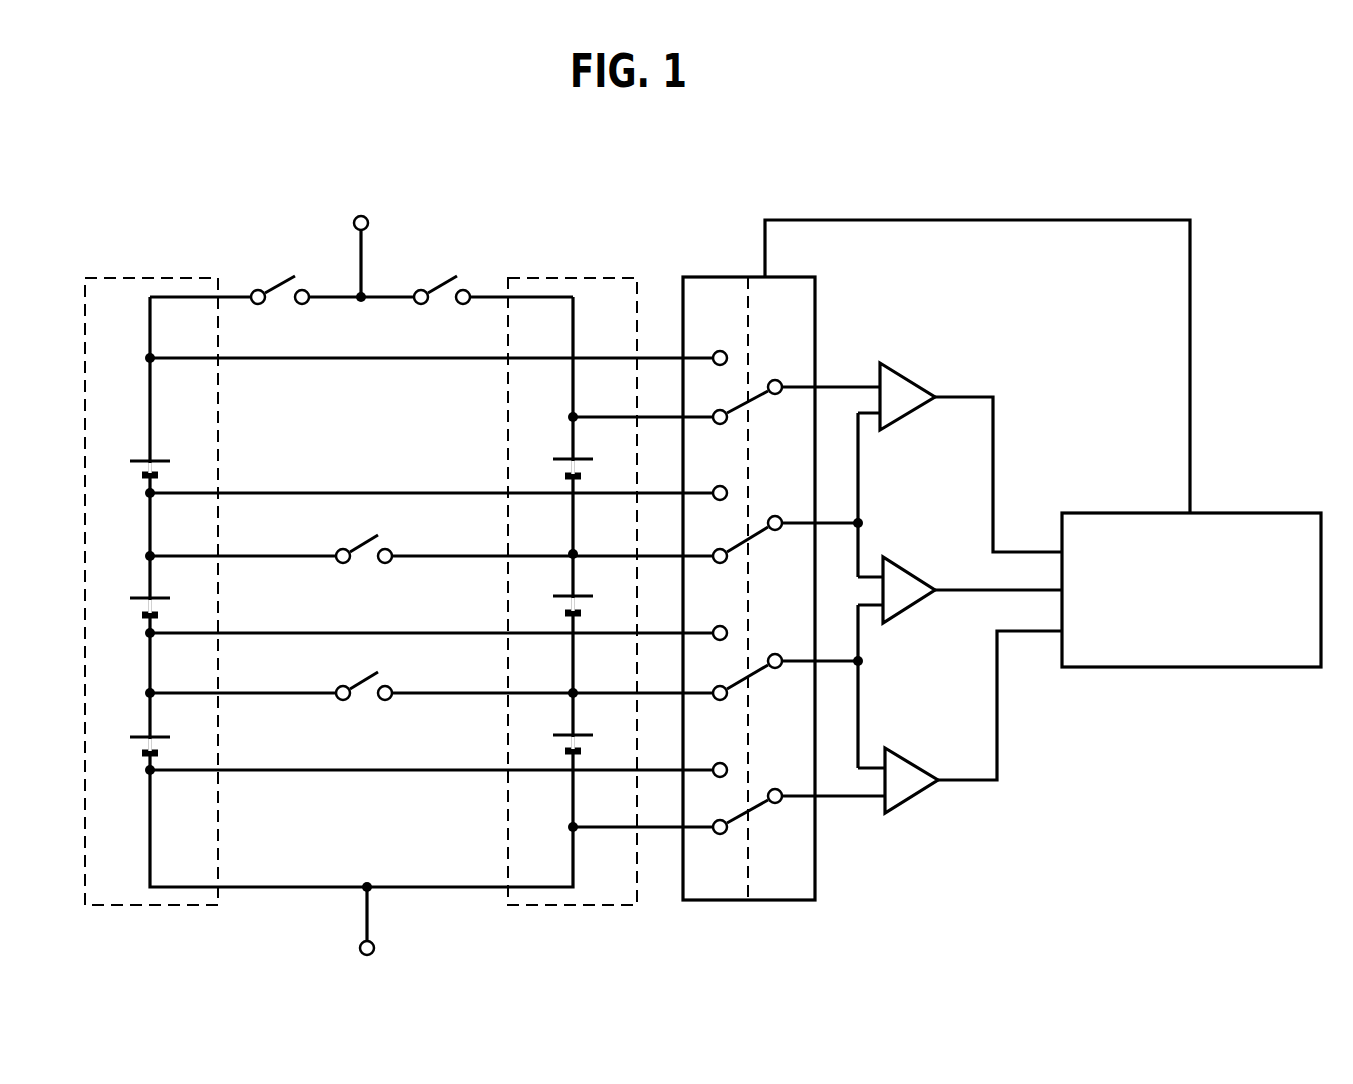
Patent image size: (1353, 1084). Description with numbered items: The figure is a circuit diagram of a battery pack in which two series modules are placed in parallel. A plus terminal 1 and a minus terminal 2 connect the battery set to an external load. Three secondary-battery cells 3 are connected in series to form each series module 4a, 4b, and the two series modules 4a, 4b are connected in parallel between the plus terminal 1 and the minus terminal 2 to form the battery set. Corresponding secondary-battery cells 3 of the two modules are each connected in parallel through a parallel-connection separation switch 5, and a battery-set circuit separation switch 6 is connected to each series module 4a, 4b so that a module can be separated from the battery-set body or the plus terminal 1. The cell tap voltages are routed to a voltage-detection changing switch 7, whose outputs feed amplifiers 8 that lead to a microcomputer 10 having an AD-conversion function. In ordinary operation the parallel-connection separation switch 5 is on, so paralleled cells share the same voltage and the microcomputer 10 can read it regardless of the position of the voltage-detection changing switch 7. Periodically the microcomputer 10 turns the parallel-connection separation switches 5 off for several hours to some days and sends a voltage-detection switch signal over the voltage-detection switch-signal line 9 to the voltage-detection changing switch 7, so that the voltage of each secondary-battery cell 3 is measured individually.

The plus terminal 1 is at (367, 217).
The minus terminal 2 is at (374, 938).
The secondary-battery cell 3 is at (160, 460).
The series module 4a is at (158, 277).
The series module 4b is at (580, 277).
The parallel-connection separation switch 5 is at (384, 548).
The battery-set circuit separation switch 6 is at (290, 280).
The voltage-detection changing switch 7 is at (780, 275).
The amplifier 8 is at (905, 380).
The voltage-detection switch-signal line 9 is at (935, 222).
The microcomputer 10 is at (1262, 513).